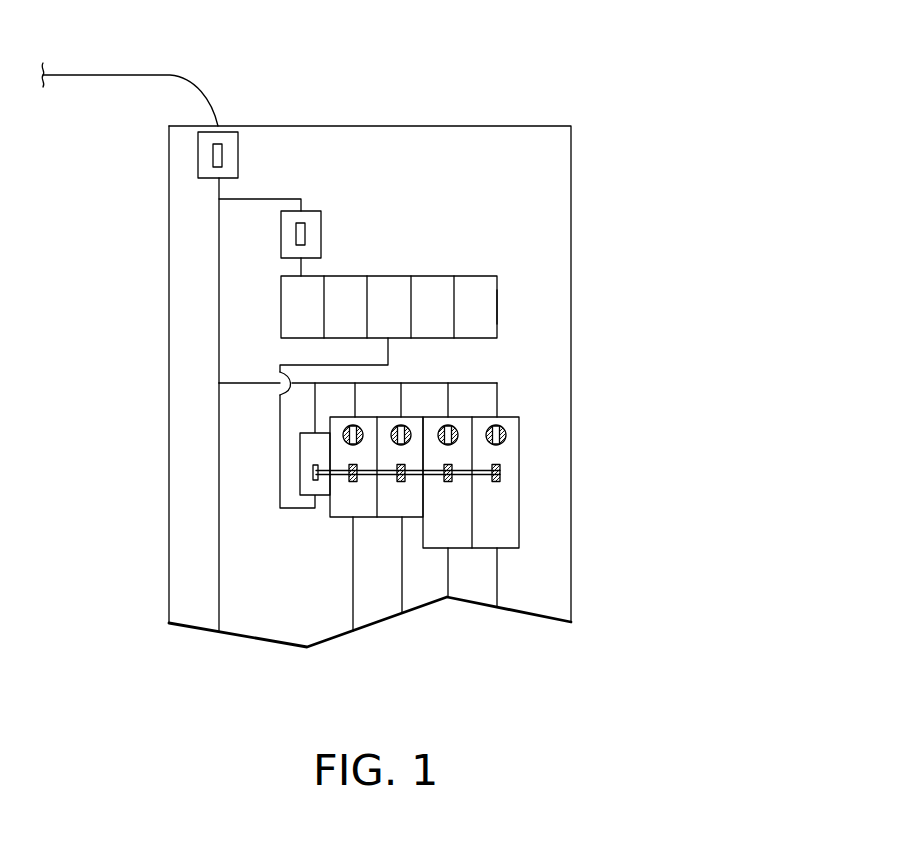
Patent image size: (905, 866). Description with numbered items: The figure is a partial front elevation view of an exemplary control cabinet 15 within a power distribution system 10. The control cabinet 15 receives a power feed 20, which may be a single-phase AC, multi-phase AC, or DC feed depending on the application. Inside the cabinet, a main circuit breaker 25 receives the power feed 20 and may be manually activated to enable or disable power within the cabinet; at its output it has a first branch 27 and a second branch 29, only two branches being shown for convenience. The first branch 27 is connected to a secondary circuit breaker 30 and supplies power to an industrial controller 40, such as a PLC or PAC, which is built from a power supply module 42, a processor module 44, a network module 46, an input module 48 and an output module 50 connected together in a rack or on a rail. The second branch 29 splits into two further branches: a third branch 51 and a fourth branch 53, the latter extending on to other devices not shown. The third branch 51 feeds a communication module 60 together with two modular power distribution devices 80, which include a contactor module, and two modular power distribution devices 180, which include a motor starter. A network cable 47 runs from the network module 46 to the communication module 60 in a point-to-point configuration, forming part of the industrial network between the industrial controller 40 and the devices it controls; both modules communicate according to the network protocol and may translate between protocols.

The power distribution system 10 is at (672, 72).
The control cabinet 15 is at (572, 243).
The power feed 20 is at (206, 94).
The main circuit breaker 25 is at (239, 157).
The first branch 27 is at (270, 198).
The second branch 29 is at (218, 331).
The secondary circuit breaker 30 is at (322, 238).
The industrial controller 40 is at (389, 266).
The power supply module 42 is at (320, 320).
The processor module 44 is at (363, 320).
The network module 46 is at (406, 320).
The input module 48 is at (450, 320).
The output module 50 is at (493, 320).
The network cable 47 is at (392, 350).
The third branch 51 is at (251, 381).
The fourth branch 53 is at (218, 476).
The communication module 60 is at (312, 448).
The modular power distribution device 80 is at (342, 518).
The modular power distribution device 180 is at (448, 533).